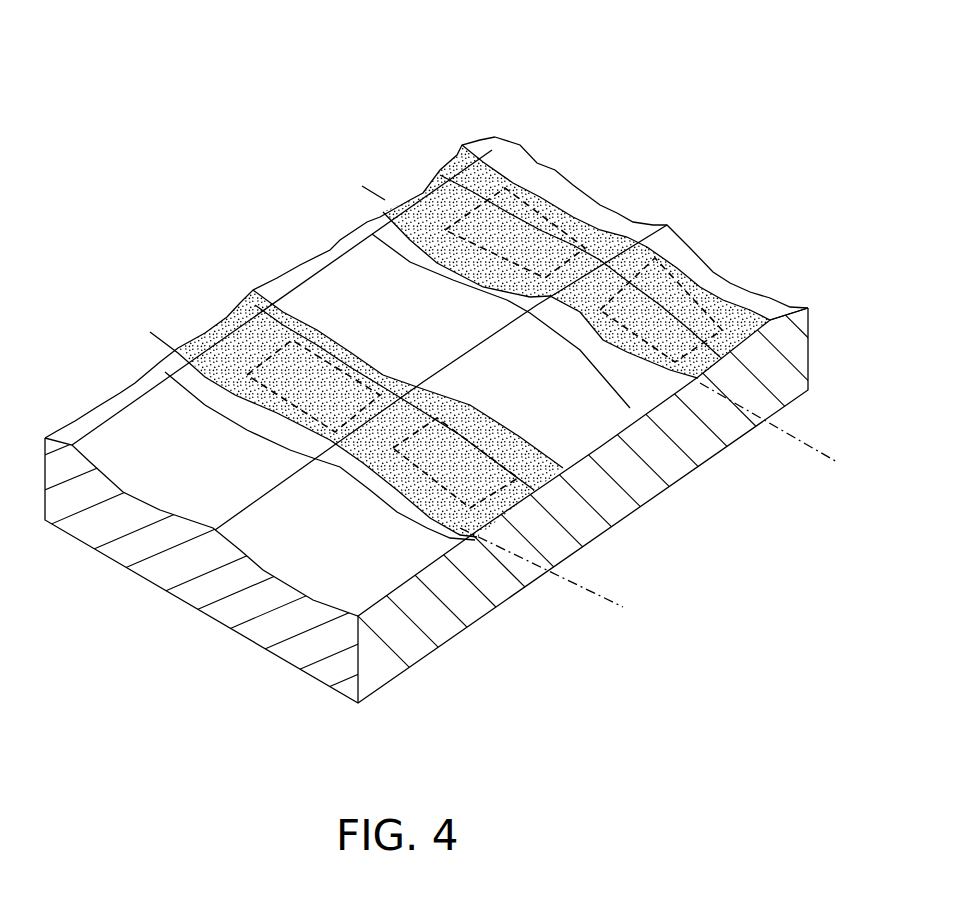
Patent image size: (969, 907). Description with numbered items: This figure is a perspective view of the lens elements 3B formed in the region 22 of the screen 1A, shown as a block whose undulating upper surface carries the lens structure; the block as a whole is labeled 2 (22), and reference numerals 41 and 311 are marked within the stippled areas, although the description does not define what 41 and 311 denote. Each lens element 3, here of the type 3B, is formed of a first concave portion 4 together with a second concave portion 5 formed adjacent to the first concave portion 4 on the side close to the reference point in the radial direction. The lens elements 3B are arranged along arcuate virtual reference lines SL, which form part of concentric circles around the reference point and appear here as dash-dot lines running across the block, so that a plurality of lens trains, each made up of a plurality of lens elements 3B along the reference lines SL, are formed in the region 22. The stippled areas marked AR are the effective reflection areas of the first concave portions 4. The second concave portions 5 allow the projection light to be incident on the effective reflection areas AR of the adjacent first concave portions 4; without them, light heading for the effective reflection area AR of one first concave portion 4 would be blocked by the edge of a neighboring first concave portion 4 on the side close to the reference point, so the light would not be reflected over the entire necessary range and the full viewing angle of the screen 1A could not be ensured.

The semiconductor substrate 2 is at (486, 92).
The region 22 is at (479, 440).
The screen 1A is at (810, 349).
The lens element 3 is at (318, 175).
The lens element 3B is at (422, 407).
The first concave portion 4 is at (382, 218).
The second concave portion 5 is at (330, 257).
The electrode pad 41 is at (557, 210).
The recess 311 is at (365, 364).
The effective reflection area AR is at (323, 327).
The reference line SL is at (813, 447).